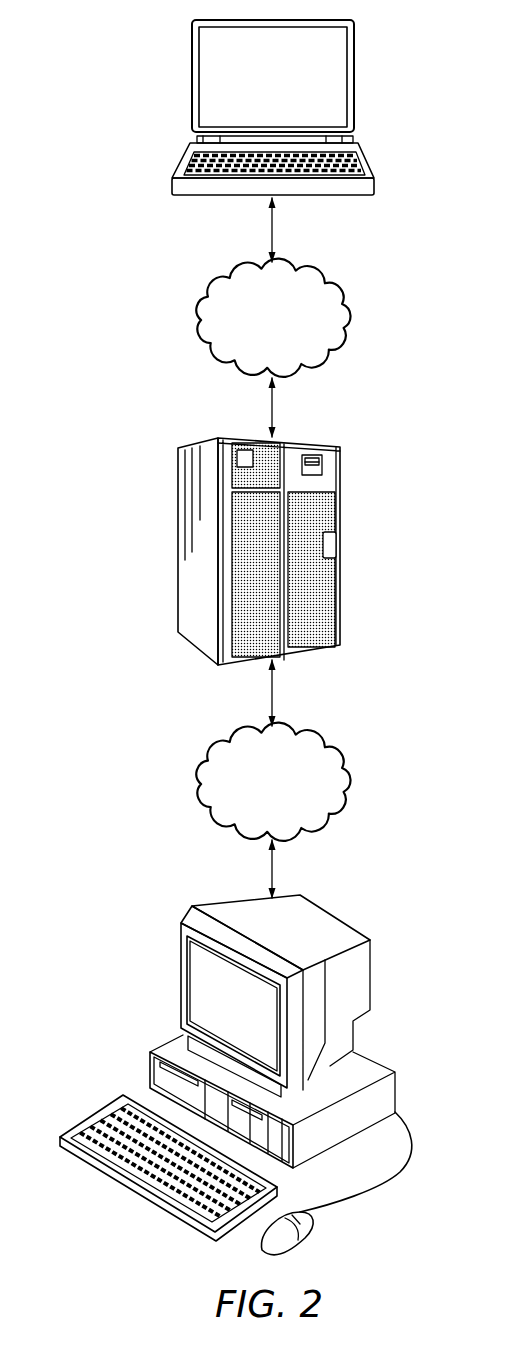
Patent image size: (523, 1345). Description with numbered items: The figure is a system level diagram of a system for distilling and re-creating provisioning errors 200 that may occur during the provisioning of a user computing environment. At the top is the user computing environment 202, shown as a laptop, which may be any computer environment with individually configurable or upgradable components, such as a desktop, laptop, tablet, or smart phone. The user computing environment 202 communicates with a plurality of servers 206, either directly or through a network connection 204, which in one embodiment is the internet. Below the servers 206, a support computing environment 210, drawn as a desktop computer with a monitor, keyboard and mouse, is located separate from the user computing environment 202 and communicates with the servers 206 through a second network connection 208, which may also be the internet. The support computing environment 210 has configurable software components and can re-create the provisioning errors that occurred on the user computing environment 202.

The system for distilling and re-creating provisioning errors 200 is at (77, 55).
The user computing environment 202 is at (355, 79).
The network connection 204 is at (292, 332).
The servers 206 is at (342, 513).
The network connection 208 is at (292, 795).
The support computing environment 210 is at (181, 975).